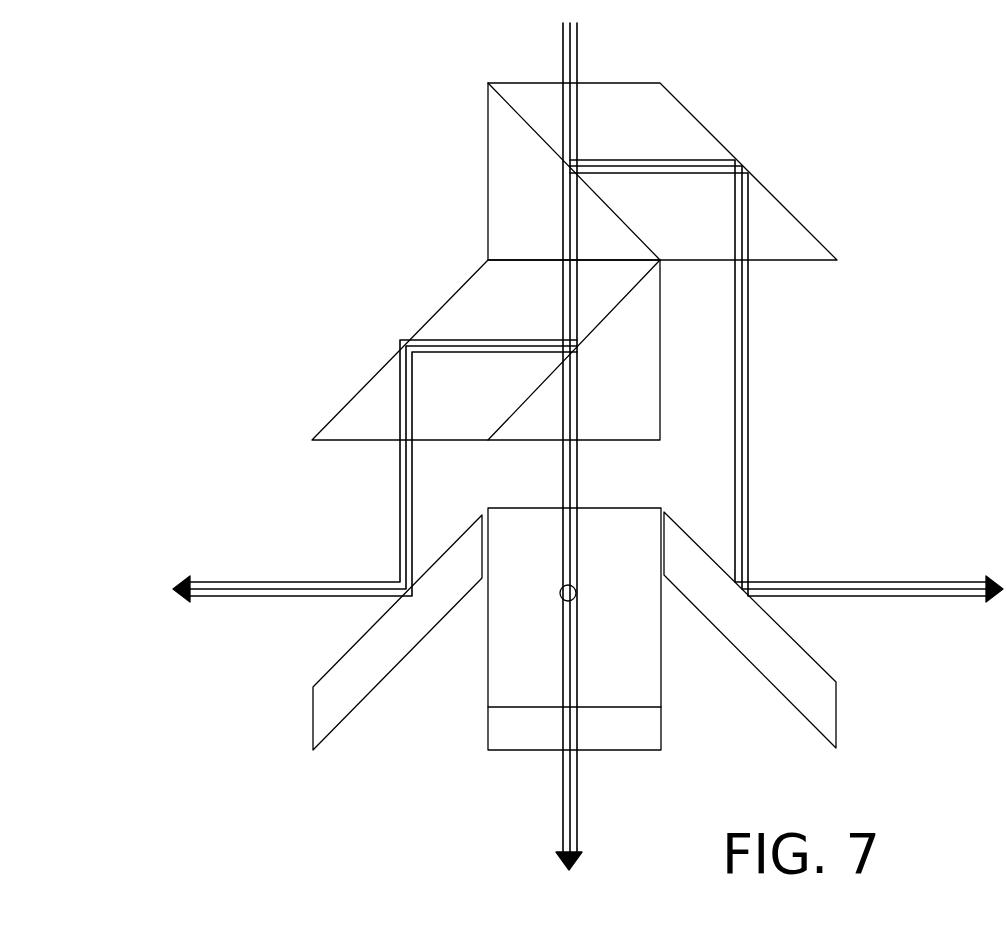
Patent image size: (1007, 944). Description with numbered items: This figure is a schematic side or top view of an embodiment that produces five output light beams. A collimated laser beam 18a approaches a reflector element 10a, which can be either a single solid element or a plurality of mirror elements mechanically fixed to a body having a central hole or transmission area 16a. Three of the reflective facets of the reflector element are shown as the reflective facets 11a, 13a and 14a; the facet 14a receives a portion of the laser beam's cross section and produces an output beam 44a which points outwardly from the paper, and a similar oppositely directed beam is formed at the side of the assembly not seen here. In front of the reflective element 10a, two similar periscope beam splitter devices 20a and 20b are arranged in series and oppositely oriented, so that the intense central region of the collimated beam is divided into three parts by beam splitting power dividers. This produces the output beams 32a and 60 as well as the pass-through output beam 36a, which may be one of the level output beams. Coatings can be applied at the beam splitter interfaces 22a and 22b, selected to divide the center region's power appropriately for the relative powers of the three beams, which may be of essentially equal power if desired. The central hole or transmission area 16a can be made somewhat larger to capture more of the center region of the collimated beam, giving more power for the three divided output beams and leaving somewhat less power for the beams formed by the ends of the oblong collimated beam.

The reflector element 10a is at (619, 642).
The reflective facet 11a is at (360, 634).
The reflective facet 13a is at (818, 663).
The reflective facet 14a is at (640, 643).
The central hole or transmission area 16a is at (656, 687).
The collimated laser beam 18a is at (573, 37).
The periscope beam splitter device 20a is at (517, 333).
The periscope beam splitter device 20b is at (642, 140).
The beam splitter interface 22a is at (596, 322).
The beam splitter interface 22b is at (537, 130).
The output beam 32a is at (887, 577).
The pass-through output beam 36a is at (572, 780).
The output beam 44a is at (568, 593).
The output beam 60 is at (260, 598).